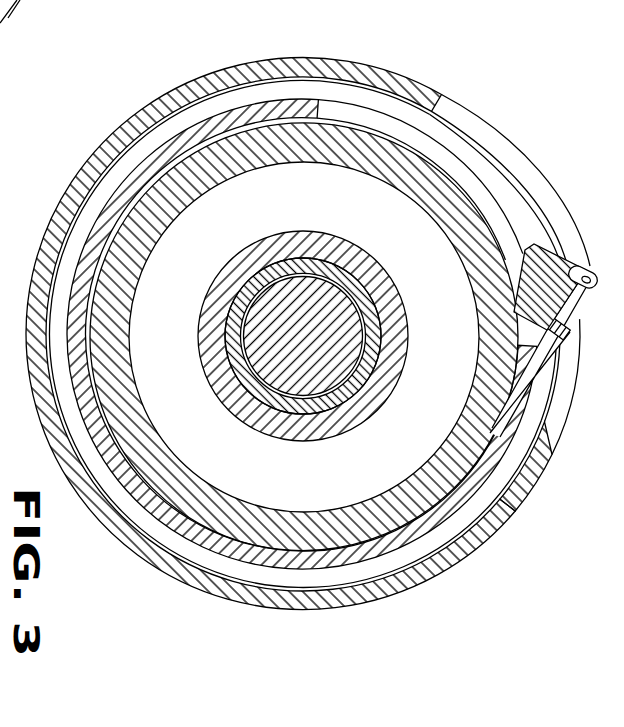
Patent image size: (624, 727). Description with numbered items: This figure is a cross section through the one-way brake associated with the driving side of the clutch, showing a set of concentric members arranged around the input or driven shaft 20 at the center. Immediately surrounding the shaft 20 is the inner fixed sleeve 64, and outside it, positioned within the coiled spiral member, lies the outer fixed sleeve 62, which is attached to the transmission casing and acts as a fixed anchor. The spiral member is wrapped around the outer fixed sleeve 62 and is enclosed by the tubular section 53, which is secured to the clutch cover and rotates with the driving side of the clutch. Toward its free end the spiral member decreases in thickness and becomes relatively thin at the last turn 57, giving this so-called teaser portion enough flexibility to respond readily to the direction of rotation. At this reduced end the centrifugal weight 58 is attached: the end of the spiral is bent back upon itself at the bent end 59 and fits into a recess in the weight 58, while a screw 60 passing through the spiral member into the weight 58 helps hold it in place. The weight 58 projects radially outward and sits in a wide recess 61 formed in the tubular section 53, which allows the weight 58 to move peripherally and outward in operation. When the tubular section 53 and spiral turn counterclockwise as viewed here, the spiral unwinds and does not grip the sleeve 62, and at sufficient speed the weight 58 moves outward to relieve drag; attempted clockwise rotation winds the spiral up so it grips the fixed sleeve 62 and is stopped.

The input or driven shaft 20 is at (312, 312).
The tubular section 53 is at (465, 550).
The last turn 57 is at (402, 533).
The centrifugal weight 58 is at (548, 278).
The bent end 59 is at (569, 276).
The screw 60 is at (572, 338).
The wide recess 61 is at (560, 420).
The outer fixed sleeve 62 is at (127, 383).
The inner fixed sleeve 64 is at (310, 406).